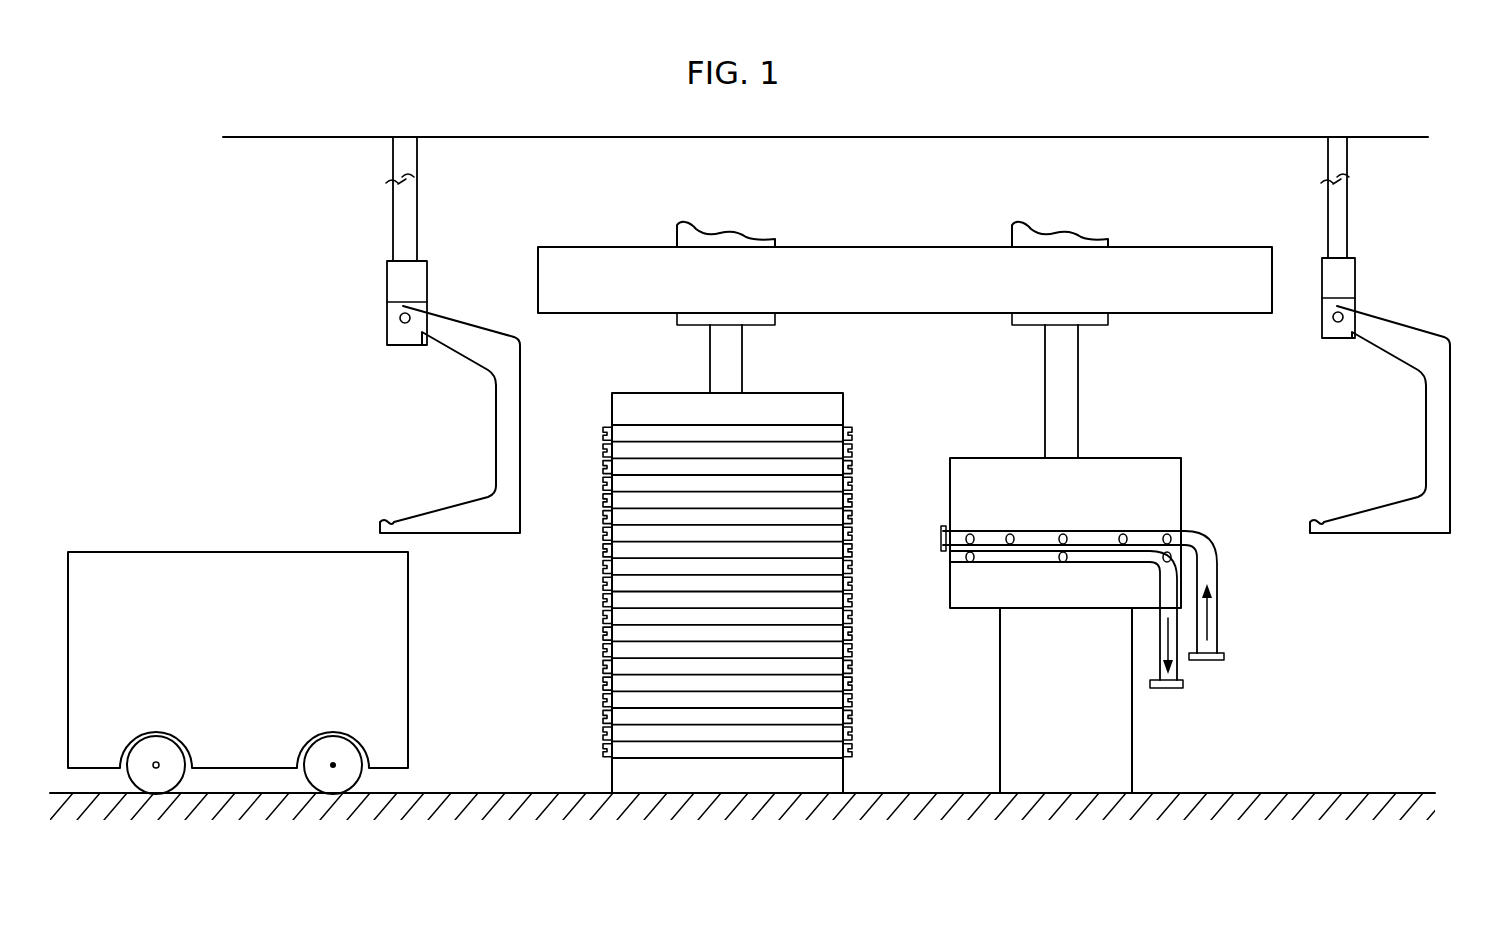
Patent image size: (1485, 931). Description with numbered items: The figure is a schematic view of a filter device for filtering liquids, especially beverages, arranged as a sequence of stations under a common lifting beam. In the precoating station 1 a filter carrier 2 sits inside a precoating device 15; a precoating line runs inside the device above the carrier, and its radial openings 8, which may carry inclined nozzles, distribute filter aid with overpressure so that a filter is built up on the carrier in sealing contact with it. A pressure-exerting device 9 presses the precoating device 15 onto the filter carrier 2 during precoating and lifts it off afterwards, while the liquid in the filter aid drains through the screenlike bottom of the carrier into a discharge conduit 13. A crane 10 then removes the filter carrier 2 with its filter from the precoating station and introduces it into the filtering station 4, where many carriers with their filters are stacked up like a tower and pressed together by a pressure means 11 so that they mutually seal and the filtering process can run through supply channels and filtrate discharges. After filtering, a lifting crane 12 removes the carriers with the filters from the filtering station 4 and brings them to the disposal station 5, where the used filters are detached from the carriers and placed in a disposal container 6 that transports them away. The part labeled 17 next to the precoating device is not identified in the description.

The precoating station 1 is at (905, 252).
The filter carrier 2 is at (820, 448).
The filtering station 4 is at (820, 242).
The disposal station 5 is at (371, 335).
The disposal container 6 is at (247, 567).
The radial openings 8 is at (1122, 542).
The pressure-exerting device 9 is at (1070, 388).
The crane 10 is at (1382, 327).
The pressure means 11 is at (727, 363).
The lifting crane 12 is at (426, 232).
The discharge conduit 13 is at (1172, 688).
The precoating device 15 is at (972, 472).
The supply pipes 17 is at (1153, 531).